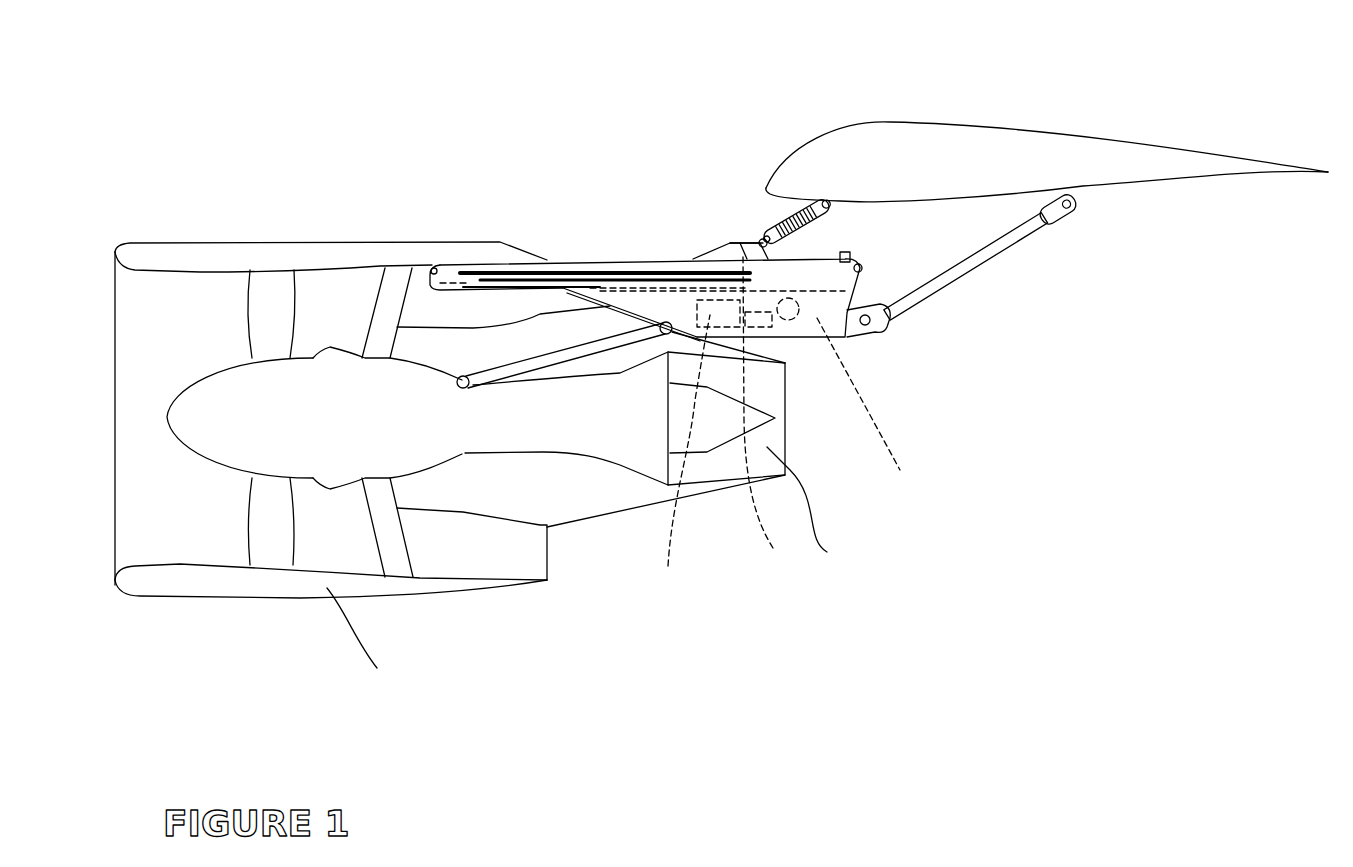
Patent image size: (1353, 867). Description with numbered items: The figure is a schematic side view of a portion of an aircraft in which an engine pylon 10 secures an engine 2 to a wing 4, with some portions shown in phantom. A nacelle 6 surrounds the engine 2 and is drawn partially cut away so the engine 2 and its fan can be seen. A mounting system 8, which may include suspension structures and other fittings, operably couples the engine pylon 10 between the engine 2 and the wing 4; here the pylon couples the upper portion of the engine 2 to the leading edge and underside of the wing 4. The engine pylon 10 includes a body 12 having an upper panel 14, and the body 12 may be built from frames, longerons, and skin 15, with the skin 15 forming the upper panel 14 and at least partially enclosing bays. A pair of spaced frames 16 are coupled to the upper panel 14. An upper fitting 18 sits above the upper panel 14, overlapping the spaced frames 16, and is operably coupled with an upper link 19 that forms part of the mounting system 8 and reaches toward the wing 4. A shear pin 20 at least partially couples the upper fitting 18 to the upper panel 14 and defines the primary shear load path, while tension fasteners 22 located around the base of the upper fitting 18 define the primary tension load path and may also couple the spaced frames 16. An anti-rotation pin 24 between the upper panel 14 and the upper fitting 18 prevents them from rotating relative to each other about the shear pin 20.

The engine 2 is at (754, 461).
The wing 4 is at (872, 132).
The nacelle 6 is at (450, 467).
The mounting system 8 is at (536, 362).
The engine pylon 10 is at (574, 228).
The body 12 is at (549, 260).
The upper panel 14 is at (606, 262).
The skin 15 is at (822, 318).
The spaced frames 16 is at (786, 455).
The upper fitting 18 is at (716, 243).
The upper link 19 is at (792, 212).
The shear pin 20 is at (740, 250).
The tension fasteners 22 is at (705, 258).
The anti-rotation pin 24 is at (773, 414).